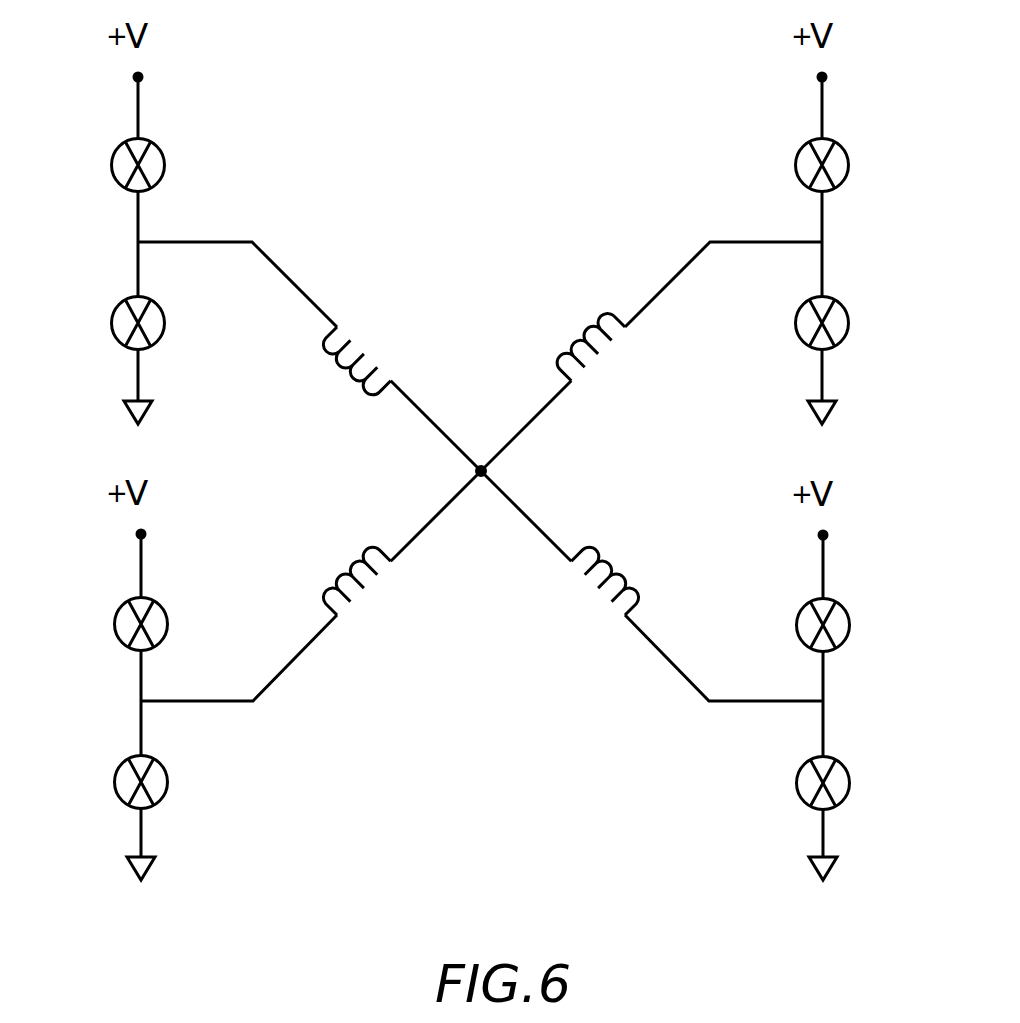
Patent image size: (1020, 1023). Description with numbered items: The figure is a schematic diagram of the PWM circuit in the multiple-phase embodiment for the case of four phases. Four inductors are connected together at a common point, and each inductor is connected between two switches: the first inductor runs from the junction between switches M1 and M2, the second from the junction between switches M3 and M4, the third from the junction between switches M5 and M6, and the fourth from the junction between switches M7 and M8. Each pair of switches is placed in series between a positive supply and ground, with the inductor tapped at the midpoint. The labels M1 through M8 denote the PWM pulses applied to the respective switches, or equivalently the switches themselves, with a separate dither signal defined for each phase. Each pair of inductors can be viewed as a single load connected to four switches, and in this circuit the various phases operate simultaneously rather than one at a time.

The switch M1 is at (106, 166).
The switch M2 is at (106, 323).
The switch M3 is at (854, 166).
The switch M4 is at (854, 323).
The switch M5 is at (856, 627).
The switch M6 is at (856, 785).
The switch M7 is at (106, 625).
The switch M8 is at (106, 782).